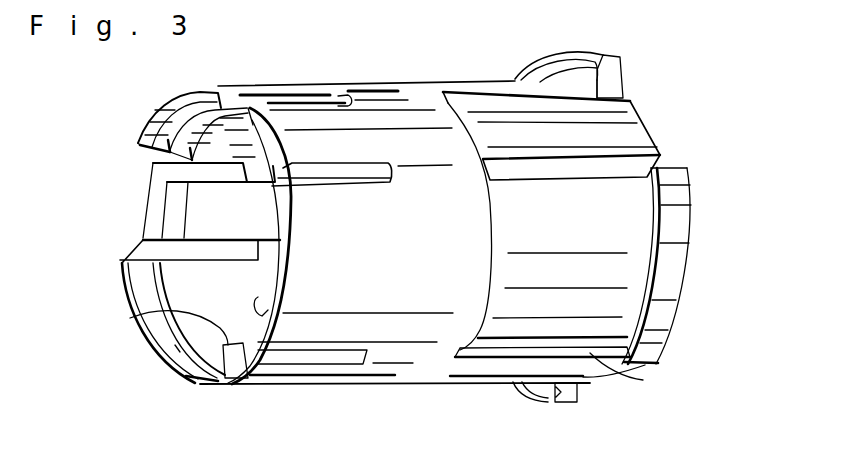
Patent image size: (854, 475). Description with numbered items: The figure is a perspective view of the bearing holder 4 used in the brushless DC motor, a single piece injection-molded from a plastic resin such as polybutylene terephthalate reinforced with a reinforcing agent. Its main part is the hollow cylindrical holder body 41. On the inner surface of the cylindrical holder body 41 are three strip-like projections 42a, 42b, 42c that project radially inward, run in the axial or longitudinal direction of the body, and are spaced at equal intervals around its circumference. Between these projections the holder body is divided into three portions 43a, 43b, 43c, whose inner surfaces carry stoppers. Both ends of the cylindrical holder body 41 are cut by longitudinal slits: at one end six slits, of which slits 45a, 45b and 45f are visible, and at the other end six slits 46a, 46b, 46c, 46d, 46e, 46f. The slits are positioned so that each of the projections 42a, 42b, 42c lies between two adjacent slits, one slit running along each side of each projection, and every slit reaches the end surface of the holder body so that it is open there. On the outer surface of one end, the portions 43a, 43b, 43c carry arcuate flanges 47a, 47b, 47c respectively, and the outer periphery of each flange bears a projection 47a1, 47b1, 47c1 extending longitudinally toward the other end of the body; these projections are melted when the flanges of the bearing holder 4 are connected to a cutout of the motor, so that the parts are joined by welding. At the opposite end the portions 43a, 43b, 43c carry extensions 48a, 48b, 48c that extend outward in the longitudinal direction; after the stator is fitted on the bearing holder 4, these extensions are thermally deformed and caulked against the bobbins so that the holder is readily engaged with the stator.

The bearing holder 4 is at (411, 71).
The cylindrical holder body 41 is at (413, 343).
The strip-like projection 42a is at (143, 135).
The strip-like projection 42b is at (140, 316).
The strip-like projection 42c is at (200, 208).
The portion of the cylindrical holder body 43a is at (492, 70).
The portion of the cylindrical holder body 43b is at (513, 330).
The portion of the cylindrical holder body 43c is at (173, 358).
The slit 45a is at (662, 160).
The slit 45b is at (590, 353).
The slit 45f is at (598, 97).
The slit 46a is at (345, 172).
The slit 46b is at (318, 358).
The slit 46c is at (212, 378).
The slit 46d is at (133, 252).
The slit 46e is at (155, 162).
The slit 46f is at (263, 86).
The arcuate flange 47a is at (605, 44).
The projection 47a1 is at (556, 52).
The arcuate flange 47b is at (677, 292).
The projection 47b1 is at (650, 344).
The arcuate flange 47c is at (573, 397).
The projection 47c1 is at (536, 408).
The extension 48a is at (167, 120).
The extension 48b is at (258, 380).
The extension 48c is at (137, 338).